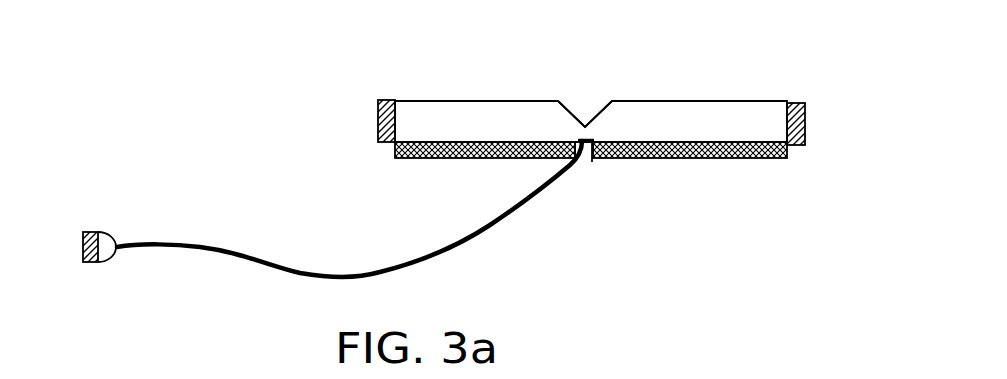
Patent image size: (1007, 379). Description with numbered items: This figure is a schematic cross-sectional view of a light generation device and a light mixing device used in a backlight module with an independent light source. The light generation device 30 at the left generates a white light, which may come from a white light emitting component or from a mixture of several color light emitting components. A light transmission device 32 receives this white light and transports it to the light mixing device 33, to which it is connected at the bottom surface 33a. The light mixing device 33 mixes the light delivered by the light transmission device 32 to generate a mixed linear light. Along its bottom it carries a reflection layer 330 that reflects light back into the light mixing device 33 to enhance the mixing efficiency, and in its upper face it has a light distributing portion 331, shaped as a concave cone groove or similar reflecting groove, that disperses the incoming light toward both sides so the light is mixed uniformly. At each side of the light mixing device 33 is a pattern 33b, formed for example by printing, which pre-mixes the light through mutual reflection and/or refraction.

The light generation device 30 is at (106, 232).
The light transmission device 32 is at (203, 246).
The light mixing device 33 is at (418, 108).
The bottom surface 33a is at (592, 162).
The pattern 33b is at (378, 118).
The reflection layer 330 is at (693, 158).
The light distributing portion 331 is at (598, 110).